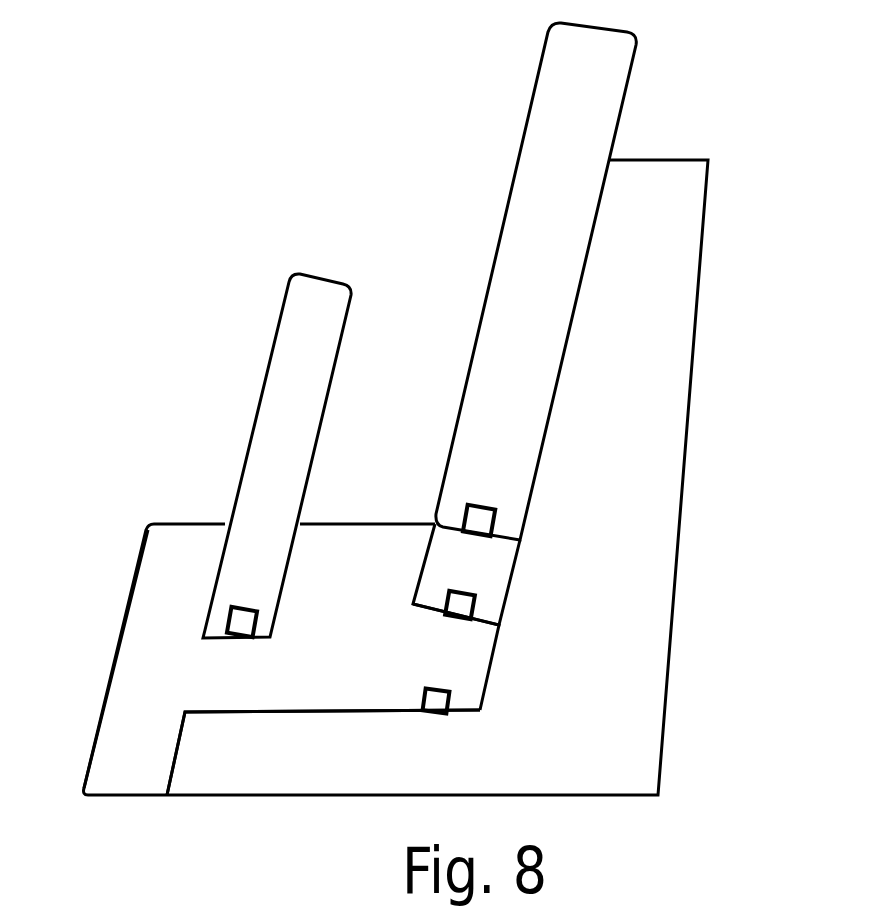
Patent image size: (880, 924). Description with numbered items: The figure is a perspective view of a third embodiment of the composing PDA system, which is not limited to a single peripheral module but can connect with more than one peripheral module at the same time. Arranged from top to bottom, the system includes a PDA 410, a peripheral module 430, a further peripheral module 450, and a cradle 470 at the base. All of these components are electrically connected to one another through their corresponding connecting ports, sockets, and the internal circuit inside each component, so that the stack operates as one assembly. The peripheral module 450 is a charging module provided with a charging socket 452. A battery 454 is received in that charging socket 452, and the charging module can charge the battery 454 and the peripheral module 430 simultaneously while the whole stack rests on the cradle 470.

The PDA 410 is at (568, 302).
The peripheral module 430 is at (493, 574).
The peripheral module 450 is at (405, 663).
The charging socket 452 is at (227, 627).
The battery 454 is at (293, 338).
The cradle 470 is at (637, 752).